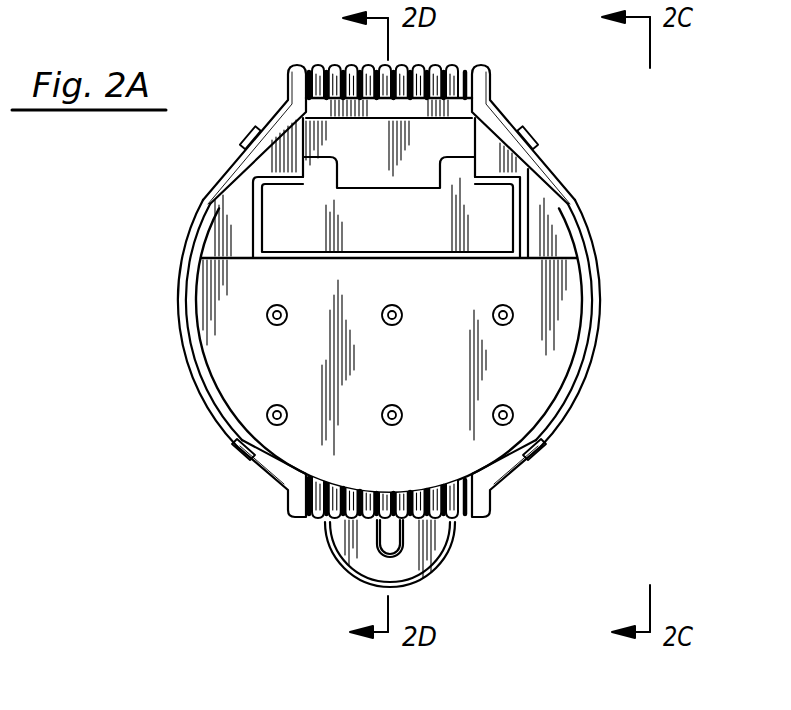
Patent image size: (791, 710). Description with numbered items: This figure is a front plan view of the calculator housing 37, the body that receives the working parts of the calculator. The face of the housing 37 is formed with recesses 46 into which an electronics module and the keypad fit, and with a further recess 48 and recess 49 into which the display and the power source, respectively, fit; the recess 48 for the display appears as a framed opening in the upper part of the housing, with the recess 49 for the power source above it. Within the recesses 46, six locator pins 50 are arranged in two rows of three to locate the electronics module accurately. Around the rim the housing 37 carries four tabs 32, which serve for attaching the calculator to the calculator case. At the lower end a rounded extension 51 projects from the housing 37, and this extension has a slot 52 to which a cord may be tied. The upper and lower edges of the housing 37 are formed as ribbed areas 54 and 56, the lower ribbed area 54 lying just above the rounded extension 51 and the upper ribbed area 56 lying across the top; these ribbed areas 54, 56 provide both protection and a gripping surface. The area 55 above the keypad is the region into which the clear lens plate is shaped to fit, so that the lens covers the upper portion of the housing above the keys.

The tabs 32 is at (550, 442).
The calculator housing 37 is at (593, 326).
The recesses 46 is at (433, 365).
The recess for display 48 is at (410, 232).
The recess for power source 49 is at (455, 140).
The locator pins 50 is at (500, 328).
The rounded extension 51 is at (440, 545).
The slot 52 is at (388, 535).
The ribbed area 54 is at (310, 520).
The area above keypad 55 is at (548, 233).
The ribbed area 56 is at (432, 66).